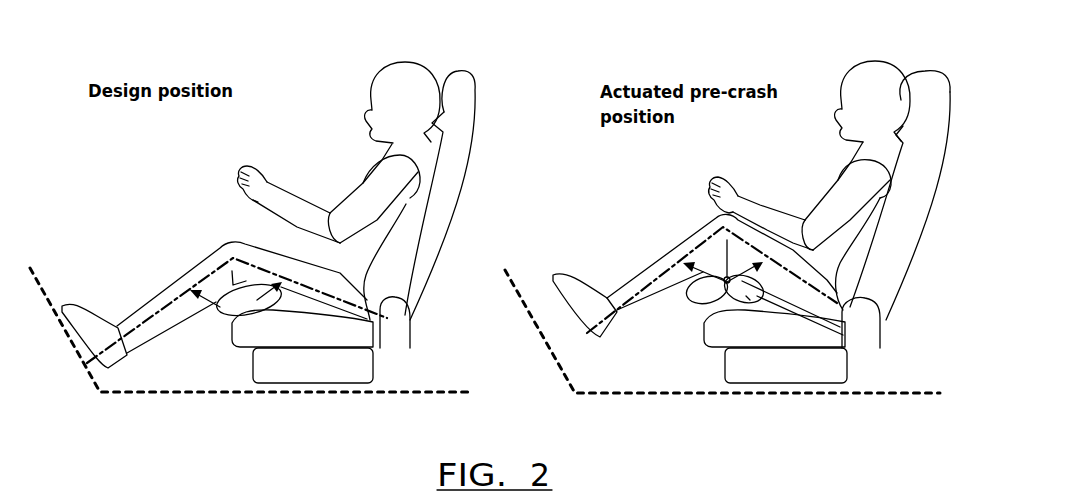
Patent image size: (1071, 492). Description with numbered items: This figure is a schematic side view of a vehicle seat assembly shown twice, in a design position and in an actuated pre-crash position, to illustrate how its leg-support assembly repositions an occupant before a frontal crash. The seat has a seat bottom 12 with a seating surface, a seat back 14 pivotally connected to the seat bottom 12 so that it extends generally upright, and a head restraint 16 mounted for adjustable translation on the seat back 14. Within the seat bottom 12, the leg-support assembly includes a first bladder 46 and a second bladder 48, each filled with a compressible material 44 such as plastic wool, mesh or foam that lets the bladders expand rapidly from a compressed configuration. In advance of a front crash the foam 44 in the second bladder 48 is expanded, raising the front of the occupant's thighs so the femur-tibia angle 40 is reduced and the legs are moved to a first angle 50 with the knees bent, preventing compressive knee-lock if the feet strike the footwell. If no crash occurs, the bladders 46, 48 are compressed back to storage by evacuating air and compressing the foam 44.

The seat bottom 12 is at (800, 337).
The seat back 14 is at (890, 257).
The head restraint 16 is at (935, 90).
The femur-tibia angle 40 is at (230, 315).
The compressible material 44 is at (695, 298).
The first bladder 46 is at (700, 302).
The second bladder 48 is at (742, 300).
The first angle 50 is at (727, 284).